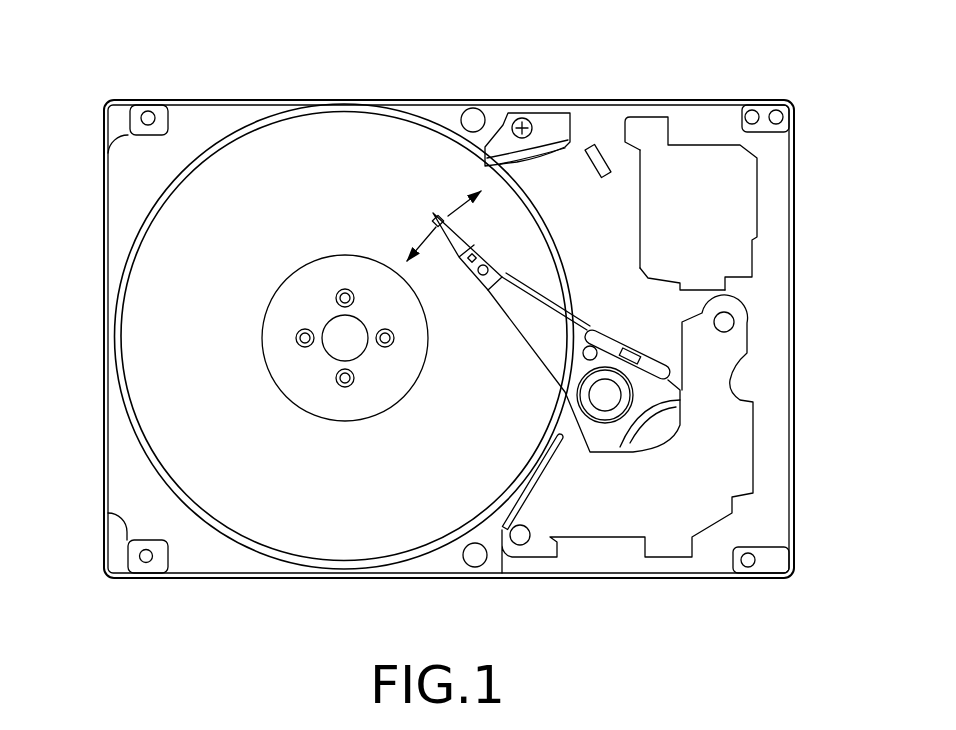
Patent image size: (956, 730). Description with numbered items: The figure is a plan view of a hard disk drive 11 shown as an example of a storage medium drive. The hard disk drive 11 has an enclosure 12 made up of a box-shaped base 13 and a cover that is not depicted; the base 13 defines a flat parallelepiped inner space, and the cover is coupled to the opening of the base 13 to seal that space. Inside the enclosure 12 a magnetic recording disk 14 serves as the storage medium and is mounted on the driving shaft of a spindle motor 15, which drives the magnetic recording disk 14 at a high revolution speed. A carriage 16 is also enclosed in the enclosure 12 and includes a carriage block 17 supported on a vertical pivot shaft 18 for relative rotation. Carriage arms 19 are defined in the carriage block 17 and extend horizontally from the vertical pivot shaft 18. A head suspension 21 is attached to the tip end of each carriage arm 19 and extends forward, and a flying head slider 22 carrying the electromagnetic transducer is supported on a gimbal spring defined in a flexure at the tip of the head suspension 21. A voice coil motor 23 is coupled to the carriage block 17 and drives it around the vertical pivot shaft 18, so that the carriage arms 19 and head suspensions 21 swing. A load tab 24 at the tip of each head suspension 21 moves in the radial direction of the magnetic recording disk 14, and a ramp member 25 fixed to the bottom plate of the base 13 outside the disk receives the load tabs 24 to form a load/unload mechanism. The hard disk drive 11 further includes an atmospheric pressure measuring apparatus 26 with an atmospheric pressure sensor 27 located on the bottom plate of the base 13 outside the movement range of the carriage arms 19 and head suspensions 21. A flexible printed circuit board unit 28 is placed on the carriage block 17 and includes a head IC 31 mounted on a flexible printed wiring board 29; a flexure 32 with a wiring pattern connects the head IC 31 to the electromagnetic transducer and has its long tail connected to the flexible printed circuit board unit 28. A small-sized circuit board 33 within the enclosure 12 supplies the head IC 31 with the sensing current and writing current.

The hard disk drive 11 is at (165, 68).
The enclosure 12 is at (448, 99).
The base 13 is at (104, 222).
The magnetic recording disk 14 is at (177, 187).
The spindle motor 15 is at (332, 353).
The carriage 16 is at (532, 357).
The carriage block 17 is at (572, 421).
The vertical pivot shaft 18 is at (600, 424).
The carriage arm 19 is at (508, 327).
The head suspension 21 is at (463, 231).
The flying head slider 22 is at (435, 235).
The voice coil motor 23 is at (755, 430).
The load tab 24 is at (436, 222).
The ramp member 25 is at (548, 112).
The atmospheric pressure measuring apparatus 26 is at (603, 148).
The atmospheric pressure sensor 27 is at (612, 163).
The flexible printed circuit board unit 28 is at (610, 342).
The flexible printed wiring board 29 is at (650, 289).
The head IC 31 is at (635, 350).
The flexure 32 is at (533, 282).
The small-sized circuit board 33 is at (641, 222).